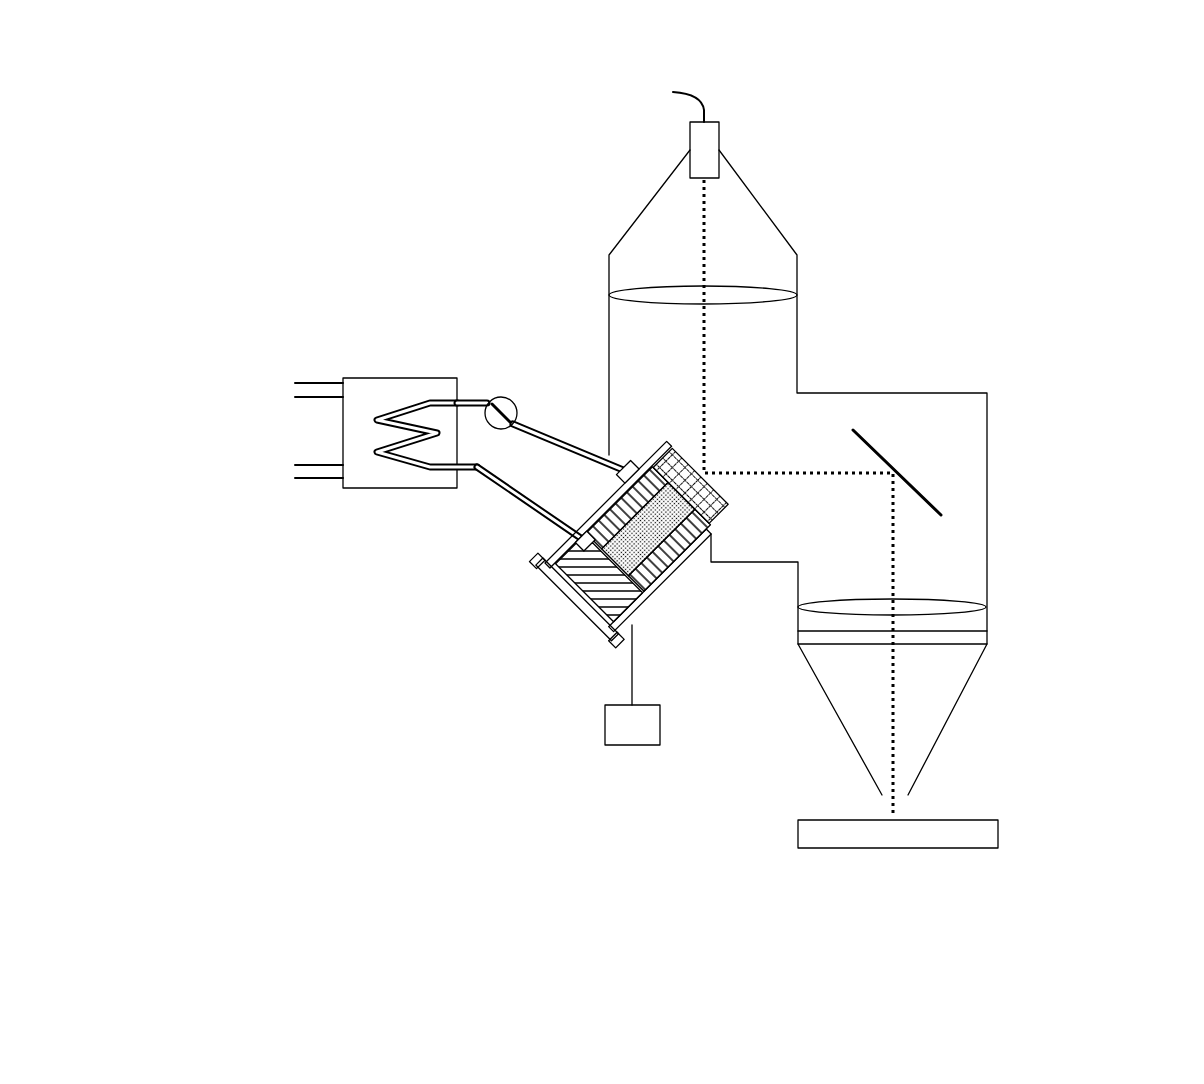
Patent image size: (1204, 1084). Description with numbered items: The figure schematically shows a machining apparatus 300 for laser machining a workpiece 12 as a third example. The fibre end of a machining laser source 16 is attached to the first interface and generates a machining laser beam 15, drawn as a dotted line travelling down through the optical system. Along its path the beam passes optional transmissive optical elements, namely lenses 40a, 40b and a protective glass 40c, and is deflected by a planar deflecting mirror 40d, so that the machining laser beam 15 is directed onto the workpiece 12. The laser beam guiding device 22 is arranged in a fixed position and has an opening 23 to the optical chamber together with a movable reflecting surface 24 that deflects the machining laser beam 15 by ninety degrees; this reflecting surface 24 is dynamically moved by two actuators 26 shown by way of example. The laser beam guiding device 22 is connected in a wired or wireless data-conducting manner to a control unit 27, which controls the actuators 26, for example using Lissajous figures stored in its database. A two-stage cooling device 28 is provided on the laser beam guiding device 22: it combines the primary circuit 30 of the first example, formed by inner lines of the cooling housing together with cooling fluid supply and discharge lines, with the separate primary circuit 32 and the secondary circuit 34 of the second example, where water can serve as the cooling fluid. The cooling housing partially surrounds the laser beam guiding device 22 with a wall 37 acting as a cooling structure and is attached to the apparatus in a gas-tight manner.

The machining apparatus 300 is at (1062, 105).
The machining laser source 16 is at (720, 140).
The machining laser beam 15 is at (690, 200).
The lens 40a is at (750, 297).
The lens 40b is at (825, 632).
The protective glass 40c is at (987, 650).
The deflecting mirror 40d is at (928, 490).
The workpiece 12 is at (998, 835).
The primary circuit 32 is at (268, 388).
The secondary circuit 34 is at (590, 468).
The cooling device 28 is at (318, 587).
The laser beam guiding device 22 is at (562, 553).
The opening 23 is at (645, 460).
The reflecting surface 24 is at (690, 455).
The actuator 26 is at (686, 545).
The control unit 27 is at (605, 722).
The primary circuit 30 is at (594, 642).
The wall 37 is at (640, 615).